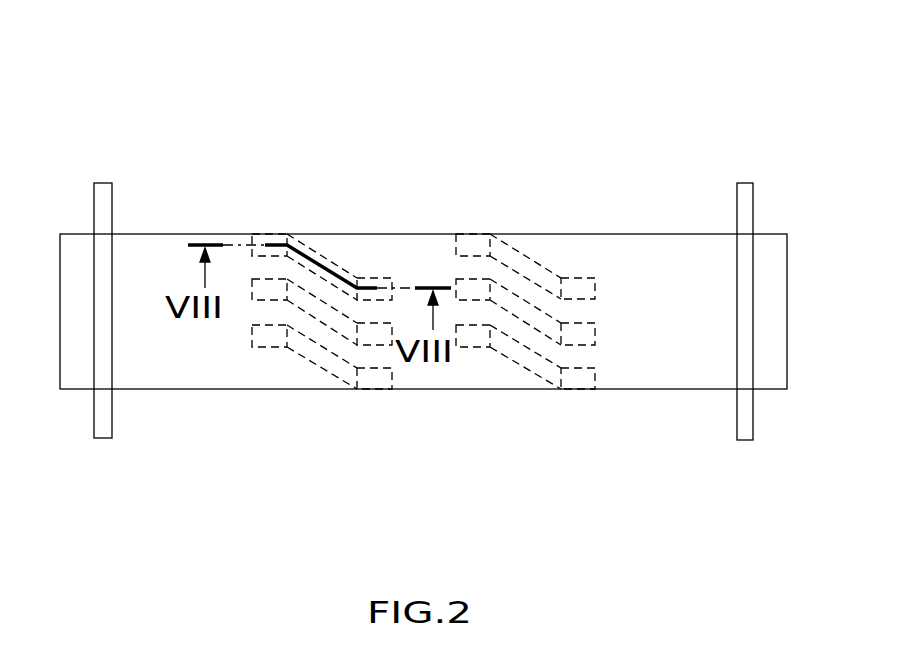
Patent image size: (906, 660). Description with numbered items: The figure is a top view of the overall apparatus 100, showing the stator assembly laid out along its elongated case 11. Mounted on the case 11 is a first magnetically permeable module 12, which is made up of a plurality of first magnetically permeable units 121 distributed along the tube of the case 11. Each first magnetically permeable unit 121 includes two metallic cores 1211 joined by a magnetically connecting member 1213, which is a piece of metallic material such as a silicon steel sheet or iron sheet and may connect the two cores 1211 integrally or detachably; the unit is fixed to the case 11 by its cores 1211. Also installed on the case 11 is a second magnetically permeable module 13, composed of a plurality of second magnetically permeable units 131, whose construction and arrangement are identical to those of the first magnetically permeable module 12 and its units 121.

The flexible display device 100 is at (107, 56).
The case 11 is at (77, 250).
The first magnetically permeable module 12 is at (357, 518).
The first magnetically permeable unit 121 is at (428, 462).
The metallic core 1211 is at (268, 342).
The magnetically connecting member 1213 is at (302, 350).
The second magnetically permeable module 13 is at (682, 262).
The second magnetically permeable unit 131 is at (597, 288).